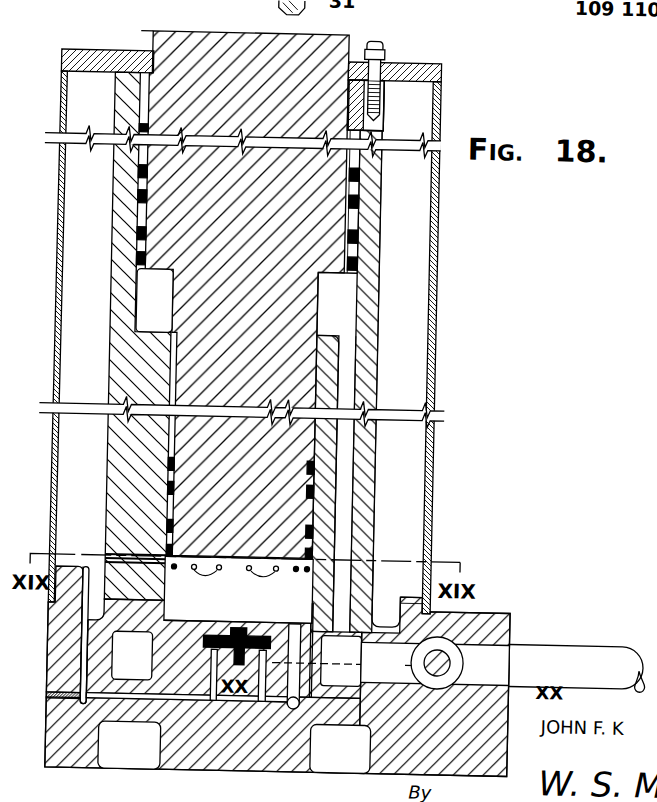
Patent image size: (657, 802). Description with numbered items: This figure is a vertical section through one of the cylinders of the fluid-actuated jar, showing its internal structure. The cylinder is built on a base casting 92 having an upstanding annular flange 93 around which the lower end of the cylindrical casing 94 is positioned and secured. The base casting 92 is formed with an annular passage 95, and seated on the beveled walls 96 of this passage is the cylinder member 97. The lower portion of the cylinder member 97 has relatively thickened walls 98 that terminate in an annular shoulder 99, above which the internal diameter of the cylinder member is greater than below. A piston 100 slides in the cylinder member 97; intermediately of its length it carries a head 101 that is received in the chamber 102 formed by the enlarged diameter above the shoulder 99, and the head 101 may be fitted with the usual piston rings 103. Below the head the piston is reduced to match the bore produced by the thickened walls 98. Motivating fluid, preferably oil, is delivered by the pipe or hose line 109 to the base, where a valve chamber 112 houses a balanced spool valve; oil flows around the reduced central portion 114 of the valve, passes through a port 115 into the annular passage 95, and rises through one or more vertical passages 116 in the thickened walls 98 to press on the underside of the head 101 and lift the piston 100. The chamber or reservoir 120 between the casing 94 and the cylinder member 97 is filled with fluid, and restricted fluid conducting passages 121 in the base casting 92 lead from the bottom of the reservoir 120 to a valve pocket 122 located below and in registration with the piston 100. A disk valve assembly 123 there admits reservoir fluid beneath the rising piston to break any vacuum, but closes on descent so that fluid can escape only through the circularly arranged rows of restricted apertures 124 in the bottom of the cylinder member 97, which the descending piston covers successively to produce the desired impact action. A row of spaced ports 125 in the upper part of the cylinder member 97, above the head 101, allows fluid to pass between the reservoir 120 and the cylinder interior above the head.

The base casting 92 is at (245, 754).
The upstanding annular flange 93 is at (417, 572).
The cylindrical casing 94 is at (435, 456).
The annular passage 95 is at (349, 672).
The beveled walls 96 is at (318, 614).
The cylinder member 97 is at (372, 386).
The thickened walls 98 is at (370, 506).
The annular shoulder 99 is at (340, 332).
The piston 100 is at (311, 293).
The head 101 is at (349, 221).
The chamber 102 is at (349, 298).
The piston rings 103 is at (357, 173).
The pipe or hose line 109 is at (612, 645).
The valve chamber 112 is at (464, 650).
The reduced central portion 114 is at (559, 677).
The port 115 is at (435, 663).
The vertical passages 116 is at (347, 363).
The chamber or reservoir 120 is at (417, 440).
The restricted fluid conducting passages 121 is at (89, 680).
The valve pocket 122 is at (212, 634).
The disk valve assembly 123 is at (224, 637).
The restricted apertures 124 is at (252, 571).
The spaced ports 125 is at (137, 127).